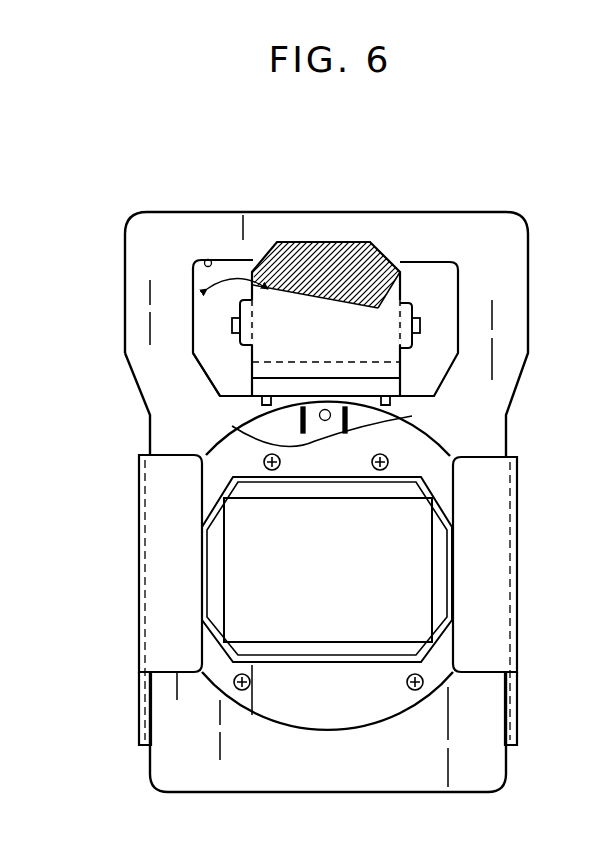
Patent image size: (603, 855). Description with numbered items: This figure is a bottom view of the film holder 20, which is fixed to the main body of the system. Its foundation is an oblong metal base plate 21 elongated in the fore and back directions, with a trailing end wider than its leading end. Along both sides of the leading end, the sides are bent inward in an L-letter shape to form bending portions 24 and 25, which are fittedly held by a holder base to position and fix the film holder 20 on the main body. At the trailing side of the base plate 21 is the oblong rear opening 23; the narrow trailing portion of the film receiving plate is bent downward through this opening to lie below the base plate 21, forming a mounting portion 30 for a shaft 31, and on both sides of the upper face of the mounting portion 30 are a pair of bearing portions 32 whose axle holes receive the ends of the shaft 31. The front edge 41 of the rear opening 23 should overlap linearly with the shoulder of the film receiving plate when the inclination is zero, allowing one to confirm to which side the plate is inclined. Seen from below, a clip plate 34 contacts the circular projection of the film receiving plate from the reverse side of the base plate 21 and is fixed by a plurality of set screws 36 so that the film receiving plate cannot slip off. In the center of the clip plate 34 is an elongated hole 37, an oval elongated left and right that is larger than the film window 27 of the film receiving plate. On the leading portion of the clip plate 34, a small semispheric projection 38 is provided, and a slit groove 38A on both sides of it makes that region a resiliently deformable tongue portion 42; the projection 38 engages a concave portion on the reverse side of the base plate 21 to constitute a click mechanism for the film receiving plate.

The film holder 20 is at (318, 162).
The base plate 21 is at (528, 304).
The rear opening 23 is at (206, 260).
The bending portion 24 is at (490, 533).
The bending portion 25 is at (160, 612).
The film window 27 is at (285, 630).
The mounting portion 30 is at (410, 262).
The shaft 31 is at (232, 323).
The bearing portion 32 is at (412, 306).
The clip plate 34 is at (430, 454).
The set screw 36 is at (263, 463).
The elongated hole 37 is at (370, 648).
The semispheric projection 38 is at (410, 416).
The slit groove 38A is at (238, 421).
The front edge 41 is at (214, 387).
The tongue portion 42 is at (315, 410).